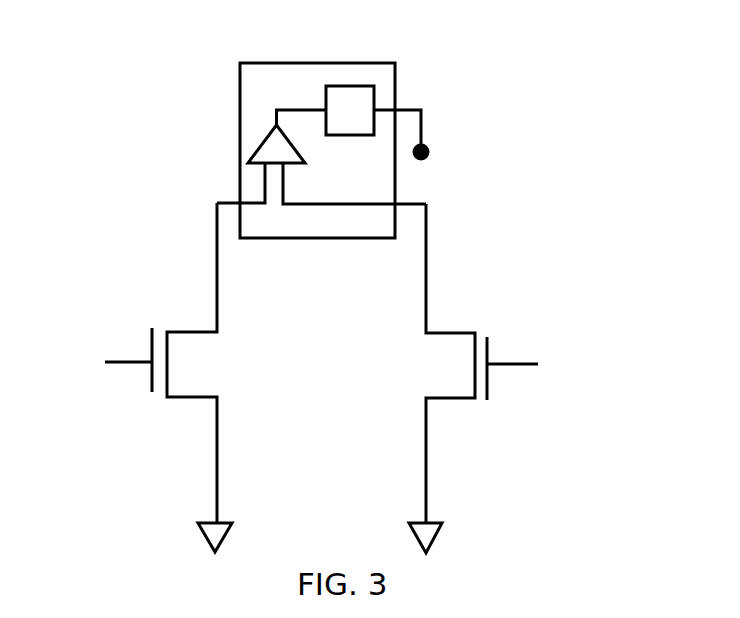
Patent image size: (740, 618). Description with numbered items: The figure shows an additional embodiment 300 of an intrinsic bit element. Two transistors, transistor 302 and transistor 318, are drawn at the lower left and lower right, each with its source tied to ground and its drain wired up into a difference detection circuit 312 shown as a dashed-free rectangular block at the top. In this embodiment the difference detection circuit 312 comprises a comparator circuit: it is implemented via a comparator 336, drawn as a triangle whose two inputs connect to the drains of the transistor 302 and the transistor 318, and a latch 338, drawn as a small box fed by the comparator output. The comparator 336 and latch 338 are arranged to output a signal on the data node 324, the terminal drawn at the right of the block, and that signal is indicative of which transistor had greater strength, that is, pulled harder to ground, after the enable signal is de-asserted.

The additional embodiment of an intrinsic bit element 300 is at (69, 162).
The difference detection circuit 312 is at (226, 69).
The latch 338 is at (347, 103).
The comparator 336 is at (272, 152).
The data node 324 is at (428, 147).
The transistor 302 is at (195, 319).
The transistor 318 is at (506, 352).